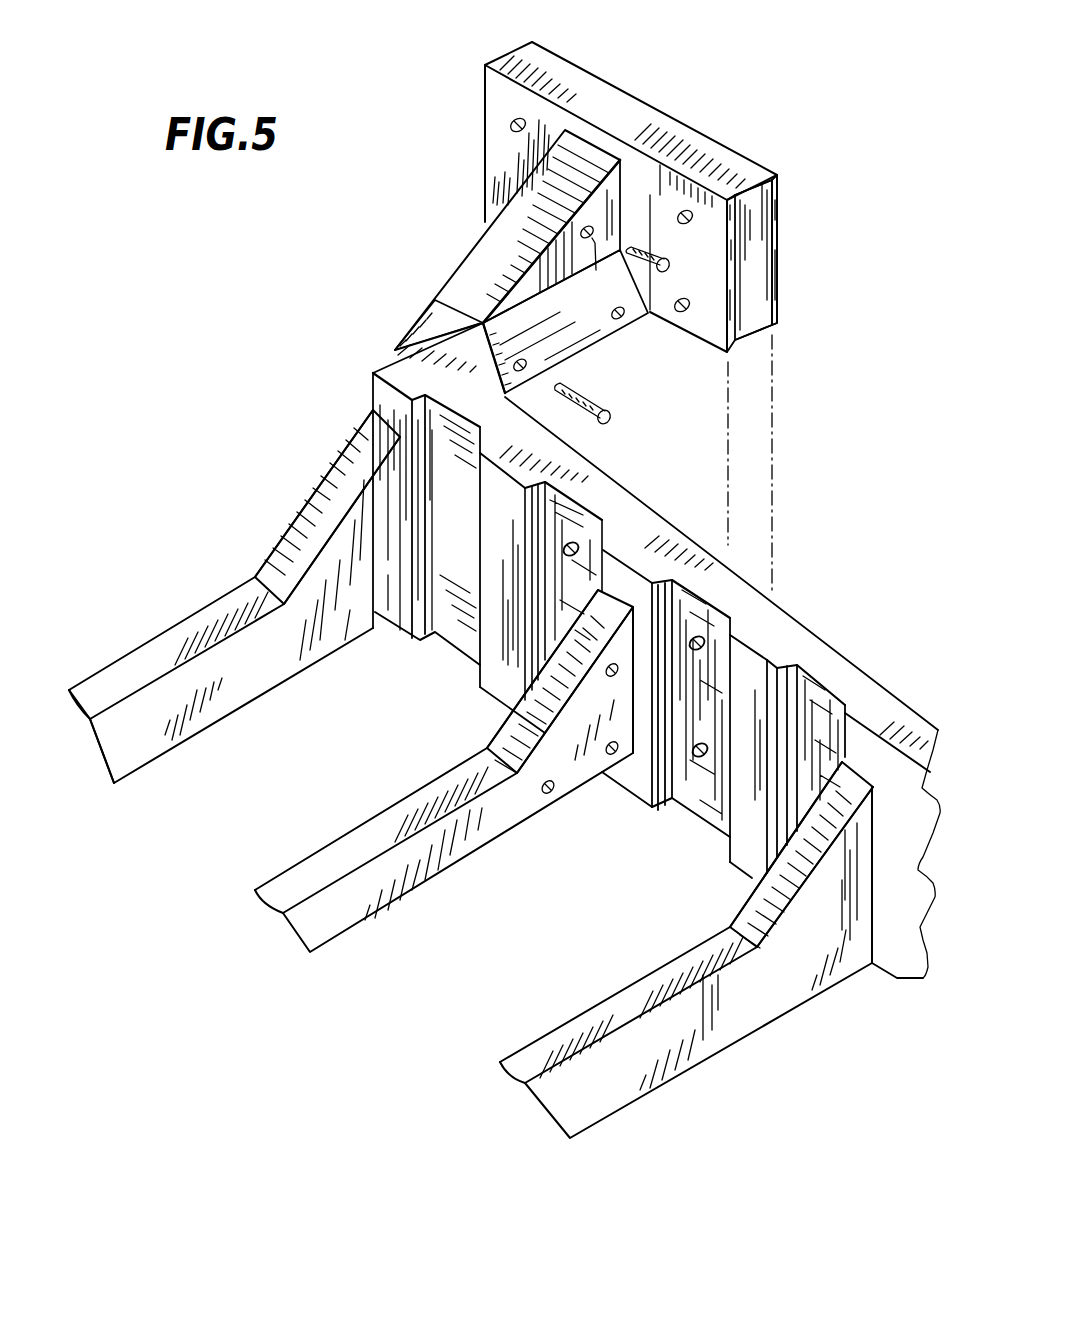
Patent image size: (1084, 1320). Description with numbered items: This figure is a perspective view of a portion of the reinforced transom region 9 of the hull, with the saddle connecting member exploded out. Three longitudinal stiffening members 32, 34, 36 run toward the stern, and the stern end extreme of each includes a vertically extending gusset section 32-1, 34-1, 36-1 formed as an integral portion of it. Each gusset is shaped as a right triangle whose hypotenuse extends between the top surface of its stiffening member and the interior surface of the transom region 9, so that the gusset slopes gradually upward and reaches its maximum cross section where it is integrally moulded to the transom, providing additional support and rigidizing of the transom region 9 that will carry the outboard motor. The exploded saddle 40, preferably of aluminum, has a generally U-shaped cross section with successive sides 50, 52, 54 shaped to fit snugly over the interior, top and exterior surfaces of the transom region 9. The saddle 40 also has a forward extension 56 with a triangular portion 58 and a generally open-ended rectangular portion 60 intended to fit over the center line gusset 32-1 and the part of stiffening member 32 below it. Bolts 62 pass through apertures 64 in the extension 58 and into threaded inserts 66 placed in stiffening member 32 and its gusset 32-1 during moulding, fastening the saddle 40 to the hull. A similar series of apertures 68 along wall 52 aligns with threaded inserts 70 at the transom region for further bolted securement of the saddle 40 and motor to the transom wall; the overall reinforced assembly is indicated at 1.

The connector assembly 1 is at (246, 543).
The transom region 9 is at (833, 649).
The longitudinal stiffening member 32 is at (352, 912).
The gusset section 32-1 is at (505, 745).
The longitudinal stiffening member 34 is at (210, 719).
The gusset section 34-1 is at (347, 480).
The longitudinal stiffening member 36 is at (620, 1095).
The gusset section 36-1 is at (750, 905).
The saddle 40 is at (671, 110).
The side of saddle 50 is at (733, 322).
The side of saddle 52 is at (752, 186).
The side of saddle 54 is at (784, 264).
The forward extension 56 is at (449, 270).
The triangular portion 58 is at (600, 255).
The rectangular portion 60 is at (577, 352).
The bolts 62 is at (634, 252).
The apertures 64 is at (618, 307).
The threaded inserts 66 is at (610, 744).
The apertures 68 is at (526, 117).
The threaded inserts 70 is at (580, 542).